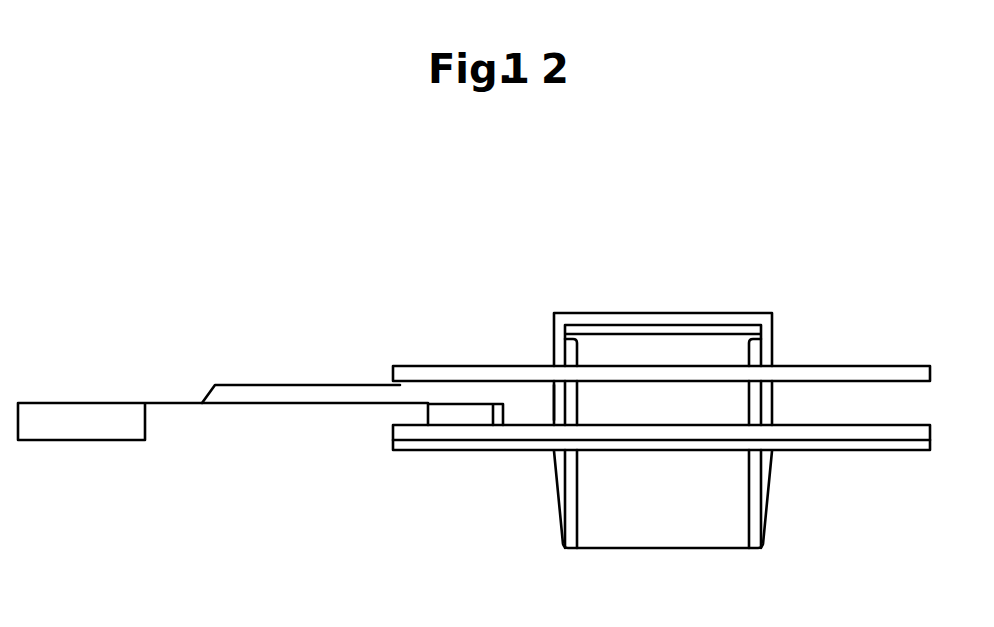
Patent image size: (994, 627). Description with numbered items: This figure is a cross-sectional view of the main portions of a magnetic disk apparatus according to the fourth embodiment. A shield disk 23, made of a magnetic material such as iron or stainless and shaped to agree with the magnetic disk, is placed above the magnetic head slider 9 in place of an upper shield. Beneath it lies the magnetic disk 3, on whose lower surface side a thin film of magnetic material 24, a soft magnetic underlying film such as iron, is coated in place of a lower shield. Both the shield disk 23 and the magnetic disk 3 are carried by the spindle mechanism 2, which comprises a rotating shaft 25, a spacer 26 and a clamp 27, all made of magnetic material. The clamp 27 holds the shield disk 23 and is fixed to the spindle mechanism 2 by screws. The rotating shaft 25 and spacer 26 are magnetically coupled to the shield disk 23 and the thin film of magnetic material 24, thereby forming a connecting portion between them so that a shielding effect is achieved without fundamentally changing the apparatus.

The spindle mechanism 2 is at (685, 347).
The magnetic disk 3 is at (805, 425).
The magnetic head slider 9 is at (448, 411).
The shield disk 23 is at (408, 373).
The thin film of magnetic material 24 is at (518, 445).
The rotating shaft 25 is at (568, 388).
The spacer 26 is at (557, 397).
The clamp 27 is at (610, 317).